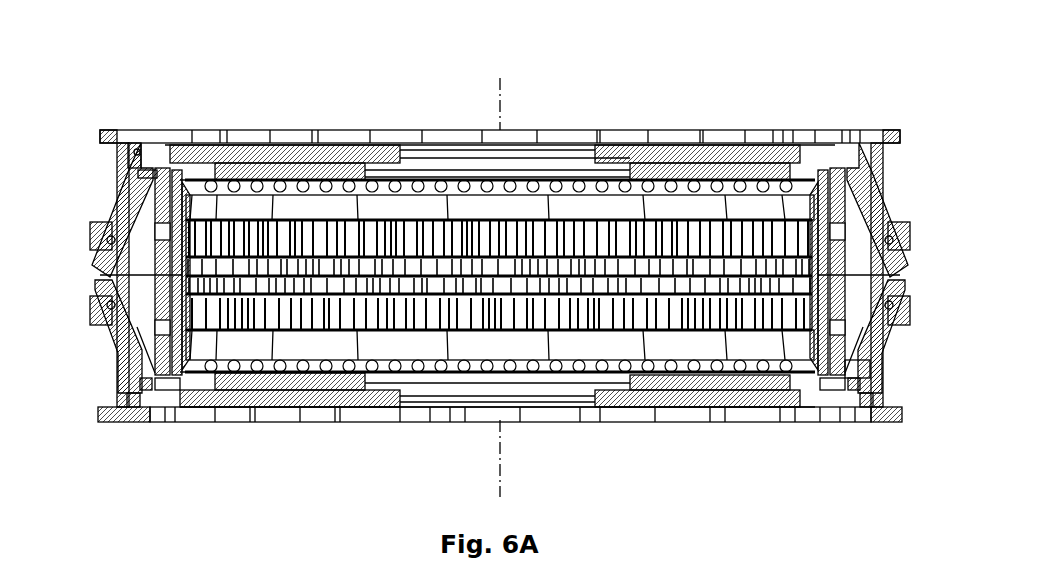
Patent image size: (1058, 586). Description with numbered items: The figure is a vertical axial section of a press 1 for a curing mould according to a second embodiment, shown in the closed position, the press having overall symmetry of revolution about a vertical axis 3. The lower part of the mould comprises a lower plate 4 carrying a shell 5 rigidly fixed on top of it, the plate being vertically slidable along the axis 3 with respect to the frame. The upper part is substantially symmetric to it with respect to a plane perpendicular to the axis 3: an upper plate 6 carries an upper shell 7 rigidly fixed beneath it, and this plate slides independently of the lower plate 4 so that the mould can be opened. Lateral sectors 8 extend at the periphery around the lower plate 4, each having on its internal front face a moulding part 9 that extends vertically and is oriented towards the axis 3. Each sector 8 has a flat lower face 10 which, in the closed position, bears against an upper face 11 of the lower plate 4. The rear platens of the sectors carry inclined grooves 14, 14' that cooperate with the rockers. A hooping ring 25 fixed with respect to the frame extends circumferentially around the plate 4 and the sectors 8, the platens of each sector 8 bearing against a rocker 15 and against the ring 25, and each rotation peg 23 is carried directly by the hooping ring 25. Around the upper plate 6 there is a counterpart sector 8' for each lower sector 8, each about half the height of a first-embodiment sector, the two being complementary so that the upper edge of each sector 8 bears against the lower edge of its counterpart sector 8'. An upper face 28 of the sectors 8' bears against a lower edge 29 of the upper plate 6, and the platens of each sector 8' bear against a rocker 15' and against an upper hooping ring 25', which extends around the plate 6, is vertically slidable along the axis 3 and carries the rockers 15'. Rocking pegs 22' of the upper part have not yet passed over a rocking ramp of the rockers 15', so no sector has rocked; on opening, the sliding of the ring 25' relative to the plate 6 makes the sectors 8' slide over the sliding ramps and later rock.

The press 1 is at (125, 72).
The vertical axis 3 is at (500, 105).
The lower plate 4 is at (706, 400).
The shell 5 is at (764, 400).
The upper plate 6 is at (718, 150).
The upper shell 7 is at (773, 165).
The lateral sector 8 is at (504, 334).
The upper sector 8' is at (498, 210).
The moulding part 9 is at (211, 240).
The lower face 10 is at (147, 390).
The upper face 11 is at (169, 388).
The groove 14 is at (891, 384).
The groove 14' is at (866, 219).
The rocker 15 is at (502, 322).
The rocker 15' is at (503, 242).
The rocking peg 22' is at (152, 118).
The rotation peg 23 is at (113, 310).
The hooping ring 25 is at (913, 303).
The hooping ring 25' is at (108, 251).
The upper face 28 is at (164, 165).
The lower edge 29 is at (138, 175).